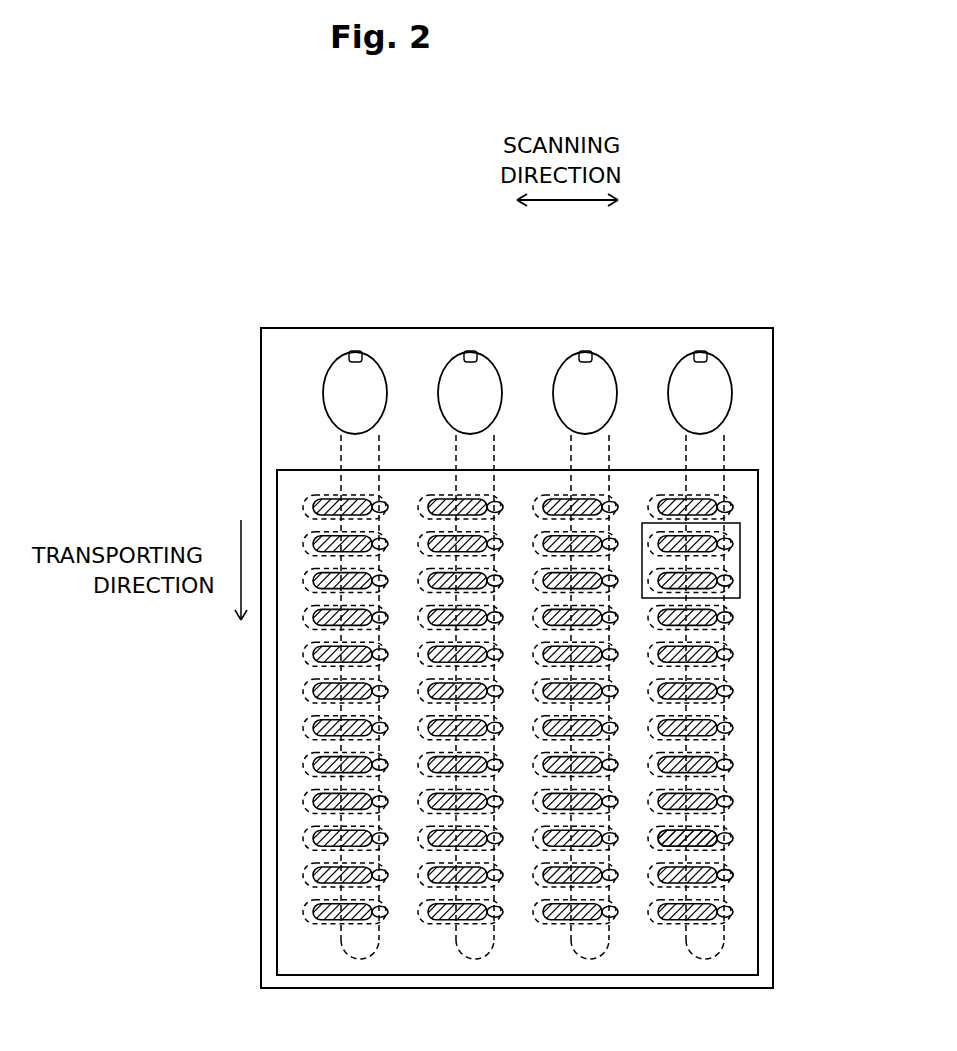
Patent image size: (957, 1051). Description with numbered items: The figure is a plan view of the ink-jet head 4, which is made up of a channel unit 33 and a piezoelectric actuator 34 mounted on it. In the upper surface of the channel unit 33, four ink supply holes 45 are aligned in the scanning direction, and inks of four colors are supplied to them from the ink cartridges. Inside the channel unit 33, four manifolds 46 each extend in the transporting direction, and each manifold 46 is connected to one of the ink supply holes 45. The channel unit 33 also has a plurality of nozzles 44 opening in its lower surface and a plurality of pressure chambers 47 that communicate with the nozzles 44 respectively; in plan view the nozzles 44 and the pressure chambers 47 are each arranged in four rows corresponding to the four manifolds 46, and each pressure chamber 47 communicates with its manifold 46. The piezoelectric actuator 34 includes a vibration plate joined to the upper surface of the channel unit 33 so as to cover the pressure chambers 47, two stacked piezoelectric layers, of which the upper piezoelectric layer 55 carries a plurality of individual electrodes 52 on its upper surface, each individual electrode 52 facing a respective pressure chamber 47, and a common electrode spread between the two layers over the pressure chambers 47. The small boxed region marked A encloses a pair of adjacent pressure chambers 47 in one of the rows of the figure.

The ink-jet head 4 is at (769, 310).
The channel unit 33 is at (786, 412).
The piezoelectric actuator 34 is at (773, 485).
The ink supply hole 45 is at (356, 352).
The nozzle 44 is at (305, 805).
The pressure chamber 47 is at (305, 727).
The manifold 46 is at (725, 678).
The individual electrode 52 is at (723, 858).
The piezoelectric layer 55 is at (750, 945).
The region A is at (759, 552).